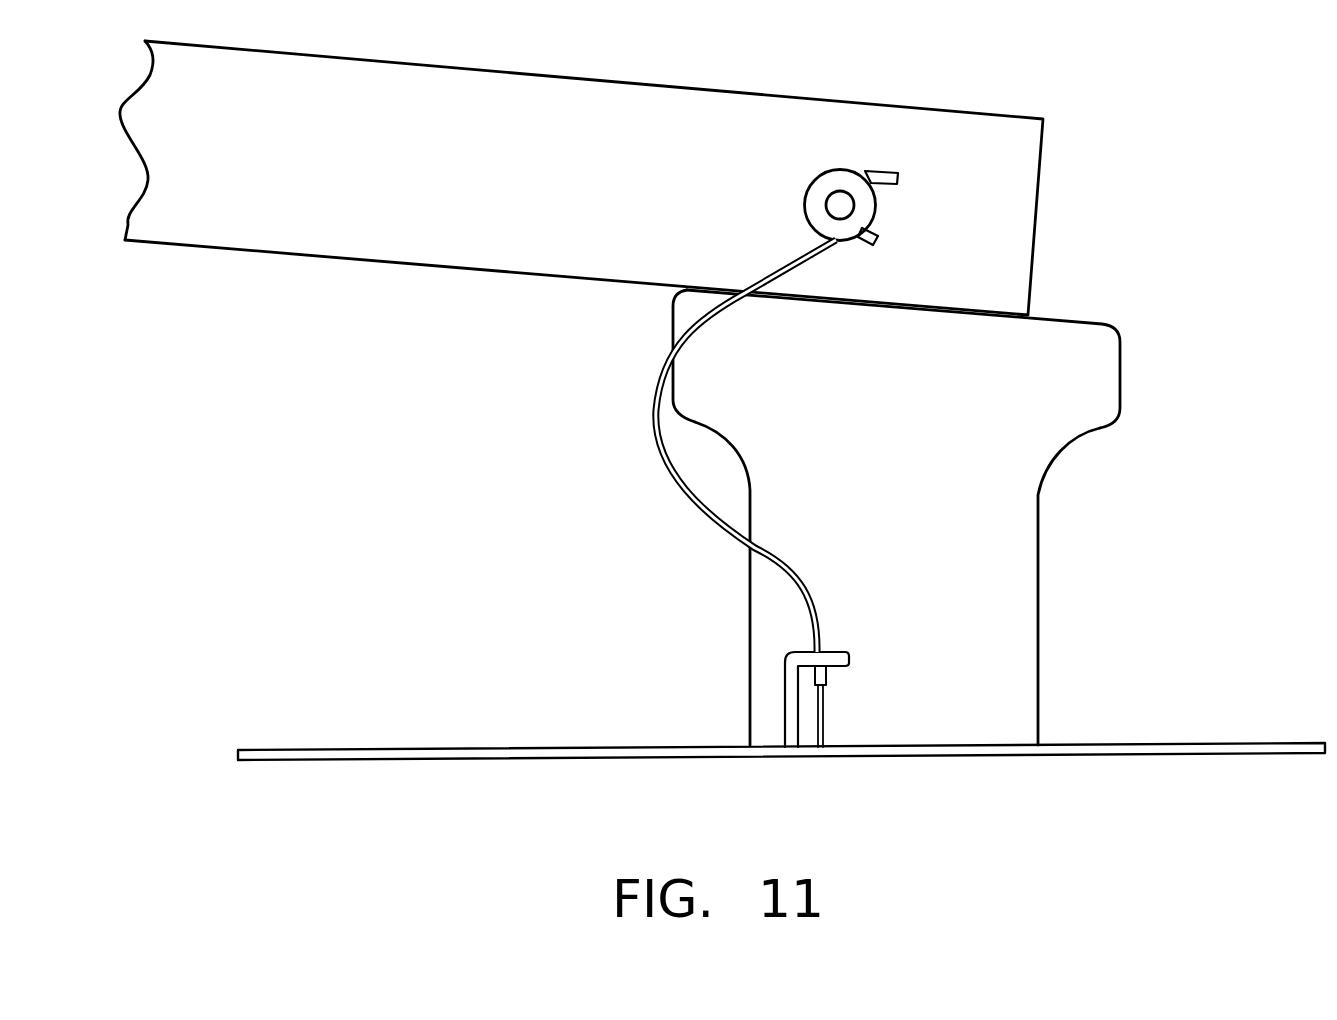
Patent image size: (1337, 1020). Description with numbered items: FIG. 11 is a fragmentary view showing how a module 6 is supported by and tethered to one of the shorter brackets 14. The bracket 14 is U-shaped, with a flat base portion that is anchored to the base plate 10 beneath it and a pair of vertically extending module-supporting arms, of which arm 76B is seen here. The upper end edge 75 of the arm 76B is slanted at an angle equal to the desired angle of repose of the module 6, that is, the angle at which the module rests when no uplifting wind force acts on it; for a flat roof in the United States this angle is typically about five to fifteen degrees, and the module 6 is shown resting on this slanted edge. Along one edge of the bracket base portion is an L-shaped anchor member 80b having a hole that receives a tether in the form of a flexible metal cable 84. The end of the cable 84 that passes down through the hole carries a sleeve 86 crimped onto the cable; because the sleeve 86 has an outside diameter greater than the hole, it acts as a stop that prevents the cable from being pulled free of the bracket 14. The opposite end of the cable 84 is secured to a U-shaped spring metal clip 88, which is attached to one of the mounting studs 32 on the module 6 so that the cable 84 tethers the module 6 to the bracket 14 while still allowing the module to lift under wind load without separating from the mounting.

The vehicle body / beam 6 is at (389, 261).
The base plate 10 is at (438, 748).
The bracket 14 is at (861, 492).
The pulley 32 is at (811, 176).
The upper end edge 75 is at (1063, 318).
The arm 76B is at (998, 527).
The anchor member 80b is at (840, 648).
The flexible metal cable 84 is at (660, 468).
The sleeve 86 is at (827, 672).
The U-shaped spring metal clip 88 is at (880, 172).